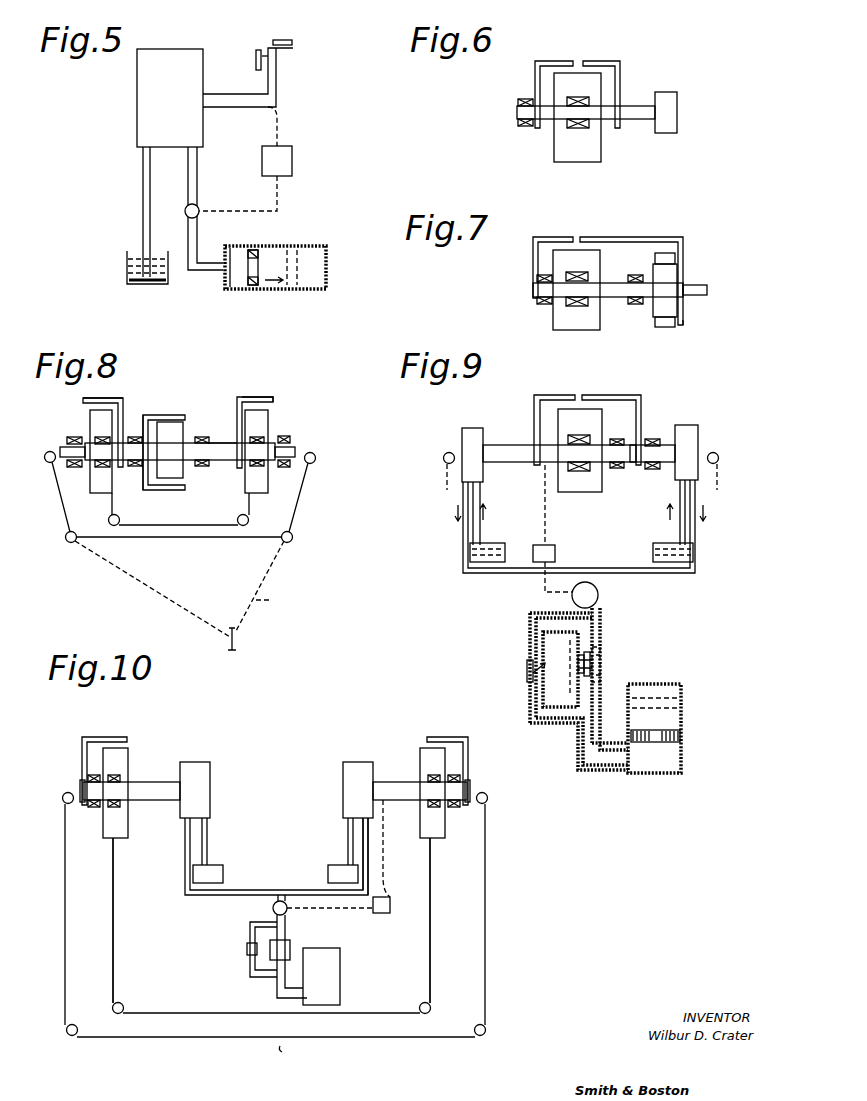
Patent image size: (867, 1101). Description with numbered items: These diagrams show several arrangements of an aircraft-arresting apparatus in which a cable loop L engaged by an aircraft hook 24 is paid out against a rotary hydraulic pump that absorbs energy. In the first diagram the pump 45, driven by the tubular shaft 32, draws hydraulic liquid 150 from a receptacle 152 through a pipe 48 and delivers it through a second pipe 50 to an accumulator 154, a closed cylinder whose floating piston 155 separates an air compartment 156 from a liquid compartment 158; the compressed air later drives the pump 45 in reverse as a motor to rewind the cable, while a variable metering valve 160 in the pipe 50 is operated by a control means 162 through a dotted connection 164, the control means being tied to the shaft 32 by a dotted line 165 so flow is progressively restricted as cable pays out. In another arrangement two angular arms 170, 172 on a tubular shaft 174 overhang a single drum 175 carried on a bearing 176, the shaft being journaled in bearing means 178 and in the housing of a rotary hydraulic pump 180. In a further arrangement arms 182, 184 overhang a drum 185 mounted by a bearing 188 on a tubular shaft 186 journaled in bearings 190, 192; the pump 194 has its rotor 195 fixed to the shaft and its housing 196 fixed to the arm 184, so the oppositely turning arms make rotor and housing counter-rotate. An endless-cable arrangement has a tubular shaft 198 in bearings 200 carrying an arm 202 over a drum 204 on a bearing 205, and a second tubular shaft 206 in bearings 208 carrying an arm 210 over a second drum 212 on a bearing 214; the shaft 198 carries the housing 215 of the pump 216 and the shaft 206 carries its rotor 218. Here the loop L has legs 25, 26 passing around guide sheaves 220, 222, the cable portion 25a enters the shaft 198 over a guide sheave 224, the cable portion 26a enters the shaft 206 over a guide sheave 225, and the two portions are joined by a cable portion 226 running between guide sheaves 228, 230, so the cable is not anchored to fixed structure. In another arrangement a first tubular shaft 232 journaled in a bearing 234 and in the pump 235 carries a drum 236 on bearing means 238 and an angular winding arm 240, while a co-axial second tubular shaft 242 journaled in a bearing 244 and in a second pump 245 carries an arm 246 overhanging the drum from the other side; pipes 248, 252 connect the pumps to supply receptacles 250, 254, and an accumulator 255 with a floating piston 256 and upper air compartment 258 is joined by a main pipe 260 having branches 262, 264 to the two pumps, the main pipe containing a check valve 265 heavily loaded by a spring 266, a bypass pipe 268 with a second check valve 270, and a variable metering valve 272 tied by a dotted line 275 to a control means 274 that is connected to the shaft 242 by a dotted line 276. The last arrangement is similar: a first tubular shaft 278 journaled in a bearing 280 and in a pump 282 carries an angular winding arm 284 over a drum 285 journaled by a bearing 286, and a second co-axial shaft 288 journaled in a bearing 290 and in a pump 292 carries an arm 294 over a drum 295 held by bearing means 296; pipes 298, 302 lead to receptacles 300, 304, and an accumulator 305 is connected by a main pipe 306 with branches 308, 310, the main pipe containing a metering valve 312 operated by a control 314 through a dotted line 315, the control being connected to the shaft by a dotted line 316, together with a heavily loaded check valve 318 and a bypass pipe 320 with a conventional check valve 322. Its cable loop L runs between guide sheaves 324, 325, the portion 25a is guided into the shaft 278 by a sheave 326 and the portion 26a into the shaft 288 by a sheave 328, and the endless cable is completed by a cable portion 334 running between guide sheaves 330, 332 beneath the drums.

In FIG. 5, the pump 45 is at (135, 101).
In FIG. 5, the tubular shaft 32 is at (230, 95).
In FIG. 5, the pipe 48 is at (143, 163).
In FIG. 5, the second pipe 50 is at (199, 183).
In FIG. 5, the hydraulic liquid 150 is at (140, 253).
In FIG. 5, the receptacle 152 is at (127, 269).
In FIG. 5, the accumulator 154 is at (310, 246).
In FIG. 5, the floating piston 155 is at (252, 281).
In FIG. 5, the air compartment 156 is at (310, 278).
In FIG. 5, the liquid compartment 158 is at (225, 278).
In FIG. 5, the variable metering valve 160 is at (199, 214).
In FIG. 5, the control means 162 is at (292, 146).
In FIG. 5, the dotted line 164 is at (283, 190).
In FIG. 5, the dotted line 165 is at (282, 112).
In FIG. 6, the angular arm 170 is at (535, 80).
In FIG. 6, the angular arm 172 is at (621, 67).
In FIG. 6, the tubular shaft 174 is at (637, 106).
In FIG. 6, the drum 175 is at (554, 149).
In FIG. 6, the bearing 176 is at (583, 128).
In FIG. 6, the bearing means 178 is at (525, 128).
In FIG. 6, the rotary hydraulic pump 180 is at (677, 126).
In FIG. 7, the angular arm 182 is at (533, 270).
In FIG. 7, the angular arm 184 is at (684, 243).
In FIG. 7, the drum 185 is at (590, 330).
In FIG. 7, the tubular shaft 186 is at (605, 283).
In FIG. 7, the bearing 188 is at (569, 310).
In FIG. 7, the bearing 190 is at (545, 305).
In FIG. 7, the bearing 192 is at (633, 305).
In FIG. 7, the rotary hydraulic pump 194 is at (686, 329).
In FIG. 7, the rotor 195 is at (653, 310).
In FIG. 7, the housing 196 is at (667, 328).
In FIG. 8, the tubular shaft 198 is at (62, 448).
In FIG. 8, the bearings 200 is at (75, 467).
In FIG. 8, the angular arm 202 is at (124, 399).
In FIG. 8, the drum 204 is at (83, 411).
In FIG. 8, the bearing 205 is at (95, 437).
In FIG. 8, the second tubular shaft 206 is at (228, 440).
In FIG. 8, the bearings 208 is at (205, 466).
In FIG. 8, the angular arm 210 is at (243, 398).
In FIG. 8, the second drum 212 is at (268, 423).
In FIG. 8, the bearing 214 is at (260, 467).
In FIG. 8, the housing 215 is at (146, 418).
In FIG. 8, the rotary hydraulic pump 216 is at (188, 403).
In FIG. 8, the rotor 218 is at (183, 472).
In FIG. 8, the guide sheave 220 is at (68, 543).
In FIG. 8, the guide sheave 222 is at (293, 539).
In FIG. 8, the guide sheave 224 is at (48, 463).
In FIG. 8, the guide sheave 225 is at (315, 457).
In FIG. 8, the cable portion 226 is at (203, 515).
In FIG. 8, the guide sheave 228 is at (116, 526).
In FIG. 8, the guide sheave 230 is at (244, 516).
In FIG. 8, the hook 24 is at (236, 646).
In FIG. 8, the leg 25 is at (118, 574).
In FIG. 8, the leg 26 is at (283, 573).
In FIG. 8, the cable portion 25a is at (112, 513).
In FIG. 9, the cable portion 25a is at (444, 480).
In FIG. 10, the cable portion 25a is at (113, 940).
In FIG. 8, the cable portion 26a is at (250, 510).
In FIG. 9, the cable portion 26a is at (718, 483).
In FIG. 10, the cable portion 26a is at (432, 922).
In FIG. 8, the loop L is at (268, 599).
In FIG. 10, the loop L is at (276, 1049).
In FIG. 9, the first tubular shaft 232 is at (510, 435).
In FIG. 9, the bearing 234 is at (614, 470).
In FIG. 9, the rotary hydraulic pump 235 is at (482, 418).
In FIG. 9, the drum 236 is at (590, 492).
In FIG. 9, the bearing means 238 is at (576, 465).
In FIG. 9, the angular winding arm 240 is at (575, 398).
In FIG. 9, the second tubular shaft 242 is at (662, 450).
In FIG. 9, the bearing 244 is at (650, 470).
In FIG. 9, the second rotary hydraulic pump 245 is at (698, 445).
In FIG. 9, the angular winding arm 246 is at (632, 399).
In FIG. 9, the pipe 248 is at (480, 535).
In FIG. 9, the supply receptacle 250 is at (500, 548).
In FIG. 9, the pipe 252 is at (680, 527).
In FIG. 9, the second supply receptacle 254 is at (655, 553).
In FIG. 9, the accumulator 255 is at (689, 724).
In FIG. 9, the floating piston 256 is at (652, 738).
In FIG. 9, the upper compartment 258 is at (683, 691).
In FIG. 9, the main pipe 260 is at (578, 736).
In FIG. 9, the branch 262 is at (478, 586).
In FIG. 9, the branch 264 is at (690, 575).
In FIG. 9, the check valve 265 is at (602, 660).
In FIG. 9, the spring 266 is at (590, 668).
In FIG. 9, the pipe 268 is at (543, 690).
In FIG. 9, the second check valve 270 is at (527, 668).
In FIG. 9, the variable metering valve 272 is at (598, 595).
In FIG. 9, the control means 274 is at (556, 553).
In FIG. 9, the dotted line 275 is at (545, 592).
In FIG. 9, the dotted line 276 is at (545, 500).
In FIG. 10, the first tubular shaft 278 is at (135, 790).
In FIG. 10, the bearing 280 is at (93, 808).
In FIG. 10, the pump 282 is at (210, 778).
In FIG. 10, the angular winding arm 284 is at (105, 737).
In FIG. 10, the drum 285 is at (128, 760).
In FIG. 10, the bearing 286 is at (113, 809).
In FIG. 10, the second co-axial shaft 288 is at (390, 782).
In FIG. 10, the bearing 290 is at (455, 808).
In FIG. 10, the pump 292 is at (360, 762).
In FIG. 10, the angular winding arm 294 is at (450, 742).
In FIG. 10, the drum 295 is at (420, 828).
In FIG. 10, the bearing means 296 is at (428, 809).
In FIG. 10, the pipe 298 is at (208, 843).
In FIG. 10, the receptacle 300 is at (223, 875).
In FIG. 10, the pipe 302 is at (348, 843).
In FIG. 10, the second supply receptacle 304 is at (333, 875).
In FIG. 10, the accumulator 305 is at (340, 979).
In FIG. 10, the main pipe 306 is at (275, 986).
In FIG. 10, the branch 308 is at (185, 853).
In FIG. 10, the branch 310 is at (368, 852).
In FIG. 10, the metering valve 312 is at (273, 908).
In FIG. 10, the control 314 is at (381, 913).
In FIG. 10, the dotted line 315 is at (330, 920).
In FIG. 10, the dotted line 316 is at (392, 885).
In FIG. 10, the check valve 318 is at (290, 950).
In FIG. 10, the pipe 320 is at (250, 930).
In FIG. 10, the second check valve 322 is at (247, 950).
In FIG. 10, the guide sheave 324 is at (66, 1033).
In FIG. 10, the guide sheave 325 is at (487, 1029).
In FIG. 10, the guide sheave 326 is at (62, 797).
In FIG. 10, the guide sheave 328 is at (488, 797).
In FIG. 10, the guide sheave 330 is at (113, 1012).
In FIG. 10, the guide sheave 332 is at (420, 1006).
In FIG. 10, the cable portion 334 is at (298, 1014).